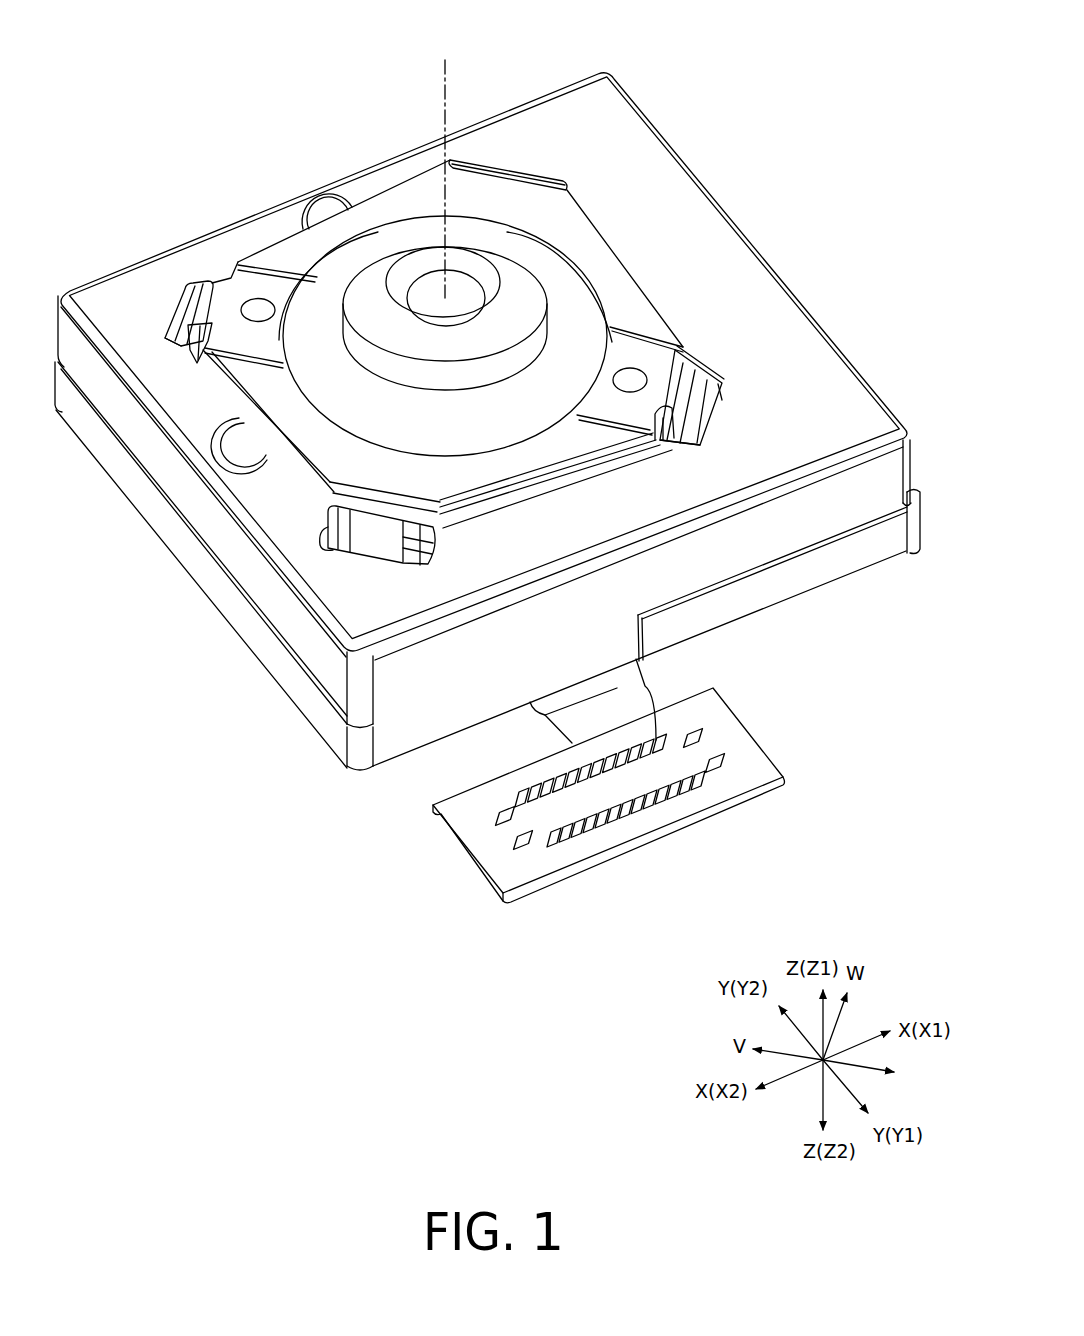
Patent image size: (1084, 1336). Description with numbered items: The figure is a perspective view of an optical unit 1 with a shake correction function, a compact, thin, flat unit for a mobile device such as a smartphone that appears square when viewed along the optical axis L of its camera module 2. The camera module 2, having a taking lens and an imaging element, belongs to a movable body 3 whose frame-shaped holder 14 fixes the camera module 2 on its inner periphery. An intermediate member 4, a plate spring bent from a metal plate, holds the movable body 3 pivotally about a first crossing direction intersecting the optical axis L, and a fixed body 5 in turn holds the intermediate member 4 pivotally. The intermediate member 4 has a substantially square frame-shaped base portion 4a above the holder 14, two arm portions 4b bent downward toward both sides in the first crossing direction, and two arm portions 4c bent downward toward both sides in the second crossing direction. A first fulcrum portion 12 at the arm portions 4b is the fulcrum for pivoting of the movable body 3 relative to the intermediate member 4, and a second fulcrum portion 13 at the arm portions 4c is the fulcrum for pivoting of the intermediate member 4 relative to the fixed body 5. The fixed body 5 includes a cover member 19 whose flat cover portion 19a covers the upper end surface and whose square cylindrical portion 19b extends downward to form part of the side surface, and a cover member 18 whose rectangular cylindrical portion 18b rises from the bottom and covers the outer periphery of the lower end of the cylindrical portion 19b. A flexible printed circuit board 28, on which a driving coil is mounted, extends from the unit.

The optical unit with shake correction function 1 is at (801, 77).
The optical axis L is at (444, 60).
The camera module 2 is at (463, 325).
The movable body 3 is at (573, 305).
The intermediate member 4 is at (447, 370).
The base portion 4a is at (275, 246).
The arm portions 4b is at (210, 284).
The arm portions 4c is at (421, 549).
The fixed body 5 is at (487, 566).
The first fulcrum portion 12 is at (162, 303).
The second fulcrum portion 13 is at (527, 163).
The holder 14 is at (723, 386).
The cover member 18 is at (858, 569).
The cylindrical portion 18b is at (638, 637).
The cover member 19 is at (483, 427).
The cover portion 19a is at (560, 110).
The cylindrical portion 19b is at (391, 764).
The flexible printed circuit board 28 is at (653, 695).